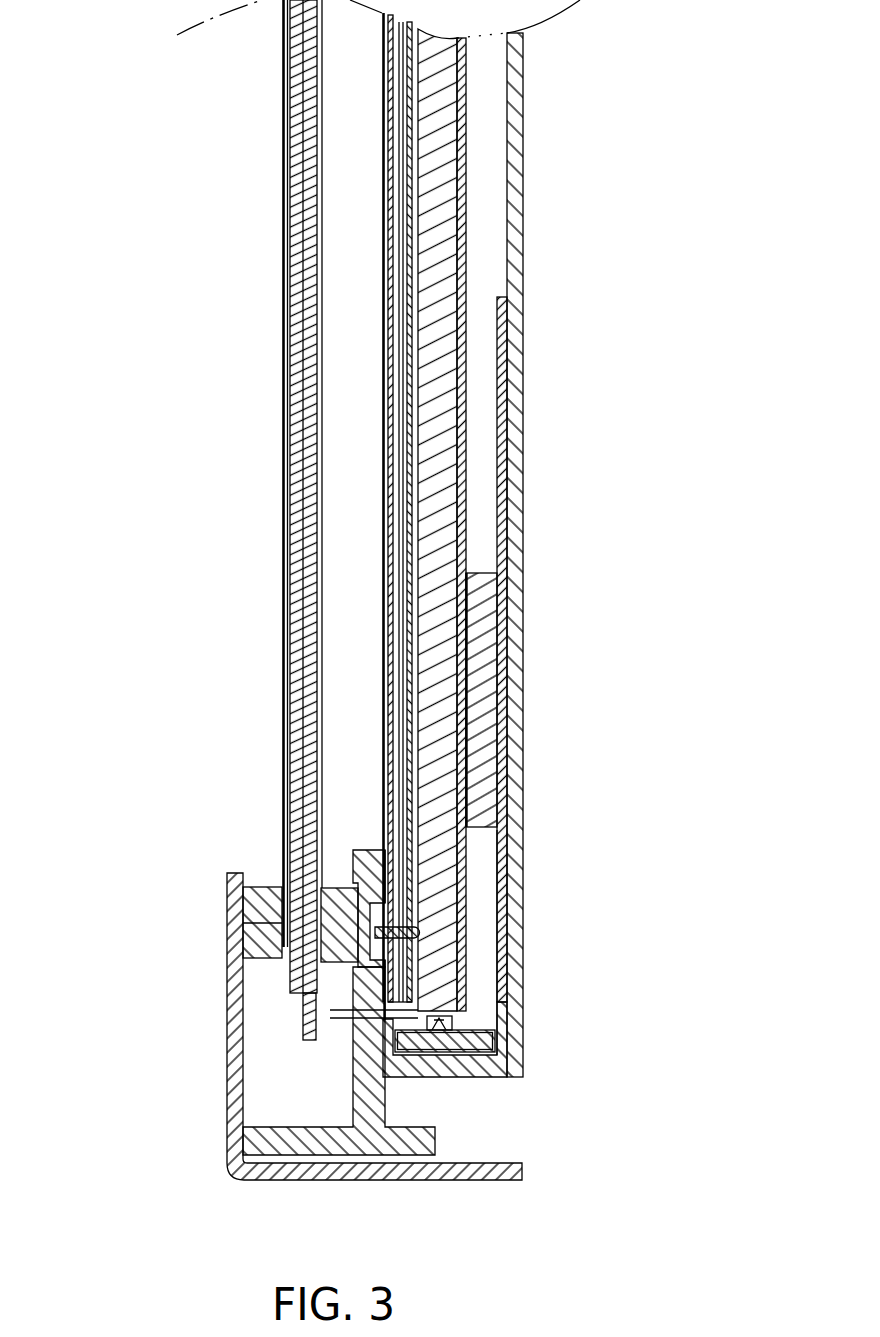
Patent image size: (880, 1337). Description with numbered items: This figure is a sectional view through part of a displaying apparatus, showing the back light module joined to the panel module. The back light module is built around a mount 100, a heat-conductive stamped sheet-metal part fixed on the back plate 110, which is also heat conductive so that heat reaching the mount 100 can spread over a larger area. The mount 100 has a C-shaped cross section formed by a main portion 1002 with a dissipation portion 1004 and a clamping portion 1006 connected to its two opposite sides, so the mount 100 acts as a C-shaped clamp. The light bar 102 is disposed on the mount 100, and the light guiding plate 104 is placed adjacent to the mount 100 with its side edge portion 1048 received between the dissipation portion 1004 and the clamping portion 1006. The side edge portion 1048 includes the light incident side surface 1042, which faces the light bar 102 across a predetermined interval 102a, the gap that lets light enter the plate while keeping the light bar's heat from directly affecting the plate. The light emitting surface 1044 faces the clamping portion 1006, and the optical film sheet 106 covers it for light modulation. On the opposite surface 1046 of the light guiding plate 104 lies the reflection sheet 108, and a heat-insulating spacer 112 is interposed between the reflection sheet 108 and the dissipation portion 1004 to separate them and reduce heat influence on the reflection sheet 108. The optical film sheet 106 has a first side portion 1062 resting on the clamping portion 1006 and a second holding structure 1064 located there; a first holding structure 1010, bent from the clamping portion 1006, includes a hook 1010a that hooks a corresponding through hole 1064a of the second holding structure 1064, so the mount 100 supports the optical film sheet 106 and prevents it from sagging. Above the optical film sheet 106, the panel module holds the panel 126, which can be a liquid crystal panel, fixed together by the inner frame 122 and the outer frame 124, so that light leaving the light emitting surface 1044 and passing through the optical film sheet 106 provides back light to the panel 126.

The mount 100 is at (537, 1027).
The light bar 102 is at (465, 1043).
The predetermined interval 102a is at (342, 977).
The light guiding plate 104 is at (443, 512).
The optical film sheet 106 is at (301, 507).
The reflection sheet 108 is at (470, 540).
The back plate 110 is at (512, 643).
The spacer 112 is at (485, 602).
The inner frame 122 is at (352, 1135).
The outer frame 124 is at (235, 1030).
The panel 126 is at (290, 745).
The main portion 1002 is at (510, 1072).
The dissipation portion 1004 is at (500, 1002).
The clamping portion 1006 is at (413, 947).
The first holding structure 1010 is at (265, 920).
The hook 1010a is at (162, 922).
The light incident side surface 1042 is at (438, 1017).
The light emitting surface 1044 is at (414, 652).
The surface 1046 is at (464, 697).
The side edge portion 1048 is at (500, 870).
The first side portion 1062 is at (355, 968).
The second holding structure 1064 is at (393, 910).
The through hole 1064a is at (235, 917).